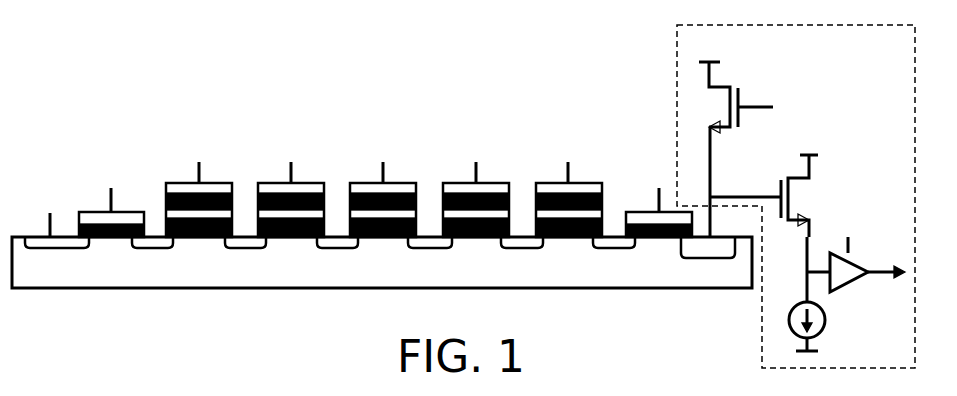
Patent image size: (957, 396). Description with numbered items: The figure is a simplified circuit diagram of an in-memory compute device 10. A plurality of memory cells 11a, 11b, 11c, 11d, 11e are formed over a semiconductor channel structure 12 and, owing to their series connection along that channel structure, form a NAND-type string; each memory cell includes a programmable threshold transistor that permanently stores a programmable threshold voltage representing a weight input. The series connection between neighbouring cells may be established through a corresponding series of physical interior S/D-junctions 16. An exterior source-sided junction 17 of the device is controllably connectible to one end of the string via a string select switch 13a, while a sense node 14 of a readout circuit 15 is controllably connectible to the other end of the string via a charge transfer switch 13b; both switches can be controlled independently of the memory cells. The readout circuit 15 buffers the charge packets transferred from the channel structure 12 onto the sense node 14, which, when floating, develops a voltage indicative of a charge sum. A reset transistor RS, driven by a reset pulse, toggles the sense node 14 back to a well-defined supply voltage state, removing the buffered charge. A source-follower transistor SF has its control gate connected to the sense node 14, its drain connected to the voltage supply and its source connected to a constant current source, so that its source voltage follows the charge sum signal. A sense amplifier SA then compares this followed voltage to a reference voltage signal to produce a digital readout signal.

The in-memory compute device 10 is at (158, 85).
The memory cell 11a is at (181, 170).
The memory cell 11b is at (272, 170).
The memory cell 11c is at (363, 171).
The memory cell 11d is at (453, 171).
The memory cell 11e is at (544, 171).
The semiconductor channel structure 12 is at (485, 252).
The string select switch 13a is at (85, 198).
The charge transfer switch 13b is at (638, 196).
The sense node 14 is at (703, 257).
The readout circuit 15 is at (760, 200).
The physical interior S/D-junction 16 is at (243, 248).
The source junction 17 is at (57, 248).
The reset transistor RS is at (698, 109).
The source-follower transistor SF is at (815, 194).
The sense amplifier SA is at (850, 287).